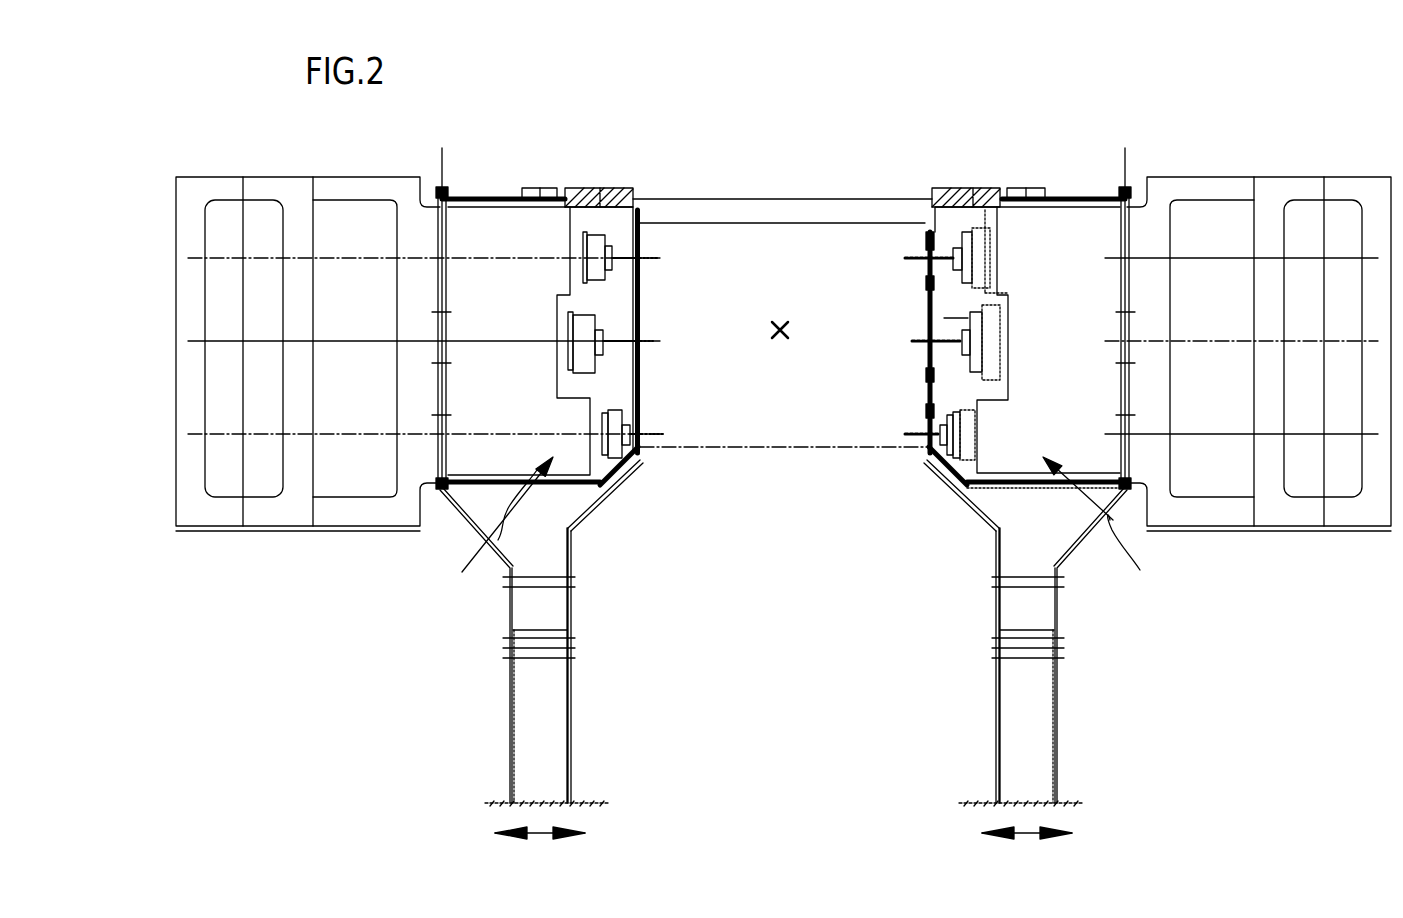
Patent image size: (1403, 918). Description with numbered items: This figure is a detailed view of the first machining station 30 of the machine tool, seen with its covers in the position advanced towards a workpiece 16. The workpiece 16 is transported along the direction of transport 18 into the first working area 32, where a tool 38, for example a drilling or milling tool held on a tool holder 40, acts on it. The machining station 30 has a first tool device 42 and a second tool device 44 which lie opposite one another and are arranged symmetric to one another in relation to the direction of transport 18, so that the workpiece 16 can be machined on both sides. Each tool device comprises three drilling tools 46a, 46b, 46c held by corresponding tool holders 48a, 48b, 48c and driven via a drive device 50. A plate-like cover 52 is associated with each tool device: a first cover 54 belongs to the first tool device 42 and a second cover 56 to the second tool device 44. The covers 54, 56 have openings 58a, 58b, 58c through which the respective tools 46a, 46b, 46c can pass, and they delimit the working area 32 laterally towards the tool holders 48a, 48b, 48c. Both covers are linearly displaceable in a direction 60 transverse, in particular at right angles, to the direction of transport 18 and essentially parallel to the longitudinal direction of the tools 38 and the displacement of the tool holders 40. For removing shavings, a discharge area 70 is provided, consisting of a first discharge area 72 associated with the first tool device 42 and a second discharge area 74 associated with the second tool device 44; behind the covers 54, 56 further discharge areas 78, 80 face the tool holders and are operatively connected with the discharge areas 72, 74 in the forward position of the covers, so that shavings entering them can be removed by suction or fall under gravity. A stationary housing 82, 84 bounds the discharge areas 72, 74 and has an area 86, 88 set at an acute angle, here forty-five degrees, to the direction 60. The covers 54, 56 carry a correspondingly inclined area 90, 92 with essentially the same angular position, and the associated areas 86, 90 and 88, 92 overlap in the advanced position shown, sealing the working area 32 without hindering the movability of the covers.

The workpiece 16 is at (787, 447).
The direction of transport 18 is at (780, 322).
The first machining station 30 is at (1167, 643).
The first working area 32 is at (781, 216).
The tool 38 is at (956, 196).
The tool holder 40 is at (991, 197).
The first tool device 42 is at (494, 527).
The second tool device 44 is at (1106, 525).
The drilling tool 46a is at (905, 258).
The drilling tool 46b is at (912, 341).
The drilling tool 46c is at (905, 434).
The tool holder 48a is at (975, 242).
The tool holder 48b is at (980, 312).
The tool holder 48c is at (960, 422).
The drive device 50 is at (1207, 213).
The cover 52 is at (927, 245).
The first cover 54 is at (641, 378).
The second cover 56 is at (927, 308).
The opening 58a is at (927, 283).
The opening 58b is at (927, 375).
The opening 58c is at (927, 416).
The direction of movement 60 is at (540, 835).
The discharge area 70 is at (1020, 523).
The first discharge area 72 is at (533, 542).
The second discharge area 74 is at (1028, 537).
The discharge area 78 is at (640, 286).
The discharge area 80 is at (955, 300).
The housing 82 is at (569, 610).
The housing 84 is at (996, 620).
The area 86 is at (590, 507).
The area 88 is at (970, 507).
The inclined area 90 is at (634, 463).
The inclined area 92 is at (933, 468).